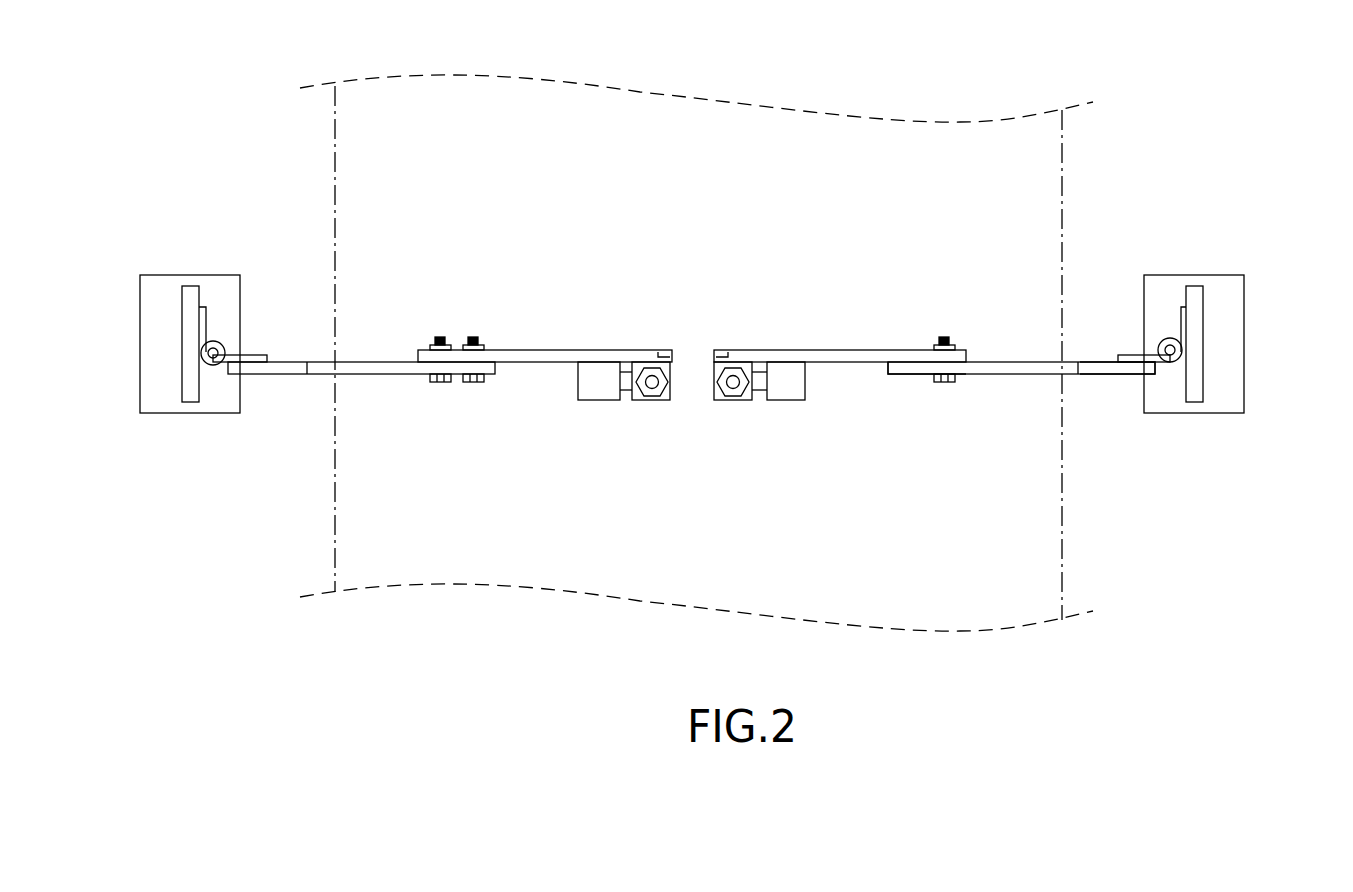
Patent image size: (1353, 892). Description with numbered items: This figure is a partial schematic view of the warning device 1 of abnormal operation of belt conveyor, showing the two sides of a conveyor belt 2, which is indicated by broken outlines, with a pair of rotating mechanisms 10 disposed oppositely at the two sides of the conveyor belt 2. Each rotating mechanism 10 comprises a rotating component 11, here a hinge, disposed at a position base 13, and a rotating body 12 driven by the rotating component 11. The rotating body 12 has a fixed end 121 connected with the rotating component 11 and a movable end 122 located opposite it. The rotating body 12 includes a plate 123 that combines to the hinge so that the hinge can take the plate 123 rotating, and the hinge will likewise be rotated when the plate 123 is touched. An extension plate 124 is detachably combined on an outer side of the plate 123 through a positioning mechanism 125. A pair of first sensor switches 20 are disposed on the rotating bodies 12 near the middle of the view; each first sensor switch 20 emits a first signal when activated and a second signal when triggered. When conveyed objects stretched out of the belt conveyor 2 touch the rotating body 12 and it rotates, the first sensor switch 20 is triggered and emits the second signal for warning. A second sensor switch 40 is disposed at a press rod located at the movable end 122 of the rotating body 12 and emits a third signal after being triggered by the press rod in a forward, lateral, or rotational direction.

The warning device 1 is at (190, 100).
The conveyor belt 2 is at (553, 117).
The rotating mechanism 10 is at (1200, 272).
The rotating component 11 is at (1168, 340).
The rotating body 12 is at (914, 306).
The position base 13 is at (1195, 352).
The first sensor switch 20 is at (663, 350).
The second sensor switch 40 is at (788, 390).
The fixed end 121 is at (1140, 380).
The movable end 122 is at (895, 380).
The plate 123 is at (1010, 368).
The extension plate 124 is at (833, 351).
The positioning mechanism 125 is at (943, 386).